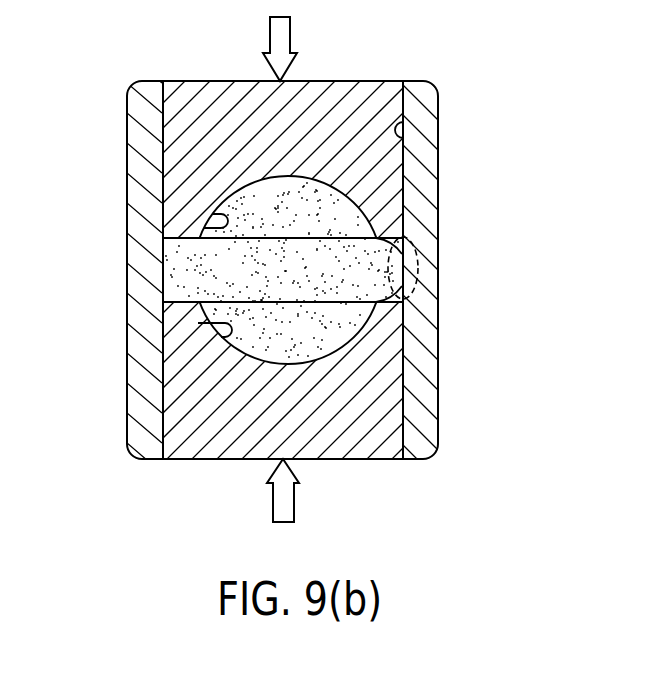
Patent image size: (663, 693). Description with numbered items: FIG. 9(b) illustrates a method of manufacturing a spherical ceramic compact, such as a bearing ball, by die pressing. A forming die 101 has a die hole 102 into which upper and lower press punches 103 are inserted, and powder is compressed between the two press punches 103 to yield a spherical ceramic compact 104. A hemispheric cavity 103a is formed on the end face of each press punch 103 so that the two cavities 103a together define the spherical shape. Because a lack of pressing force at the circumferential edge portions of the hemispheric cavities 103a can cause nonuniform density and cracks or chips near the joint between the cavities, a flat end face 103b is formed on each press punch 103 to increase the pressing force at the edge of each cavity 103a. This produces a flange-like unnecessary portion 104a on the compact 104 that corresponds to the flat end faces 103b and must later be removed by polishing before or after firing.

The forming die 101 is at (425, 217).
The die hole 102 is at (403, 118).
The press punches 103 is at (347, 88).
The hemispheric cavity 103a is at (215, 228).
The flat end face 103b is at (390, 296).
The ceramic compact 104 is at (352, 312).
The flange-like unnecessary portion 104a is at (170, 277).